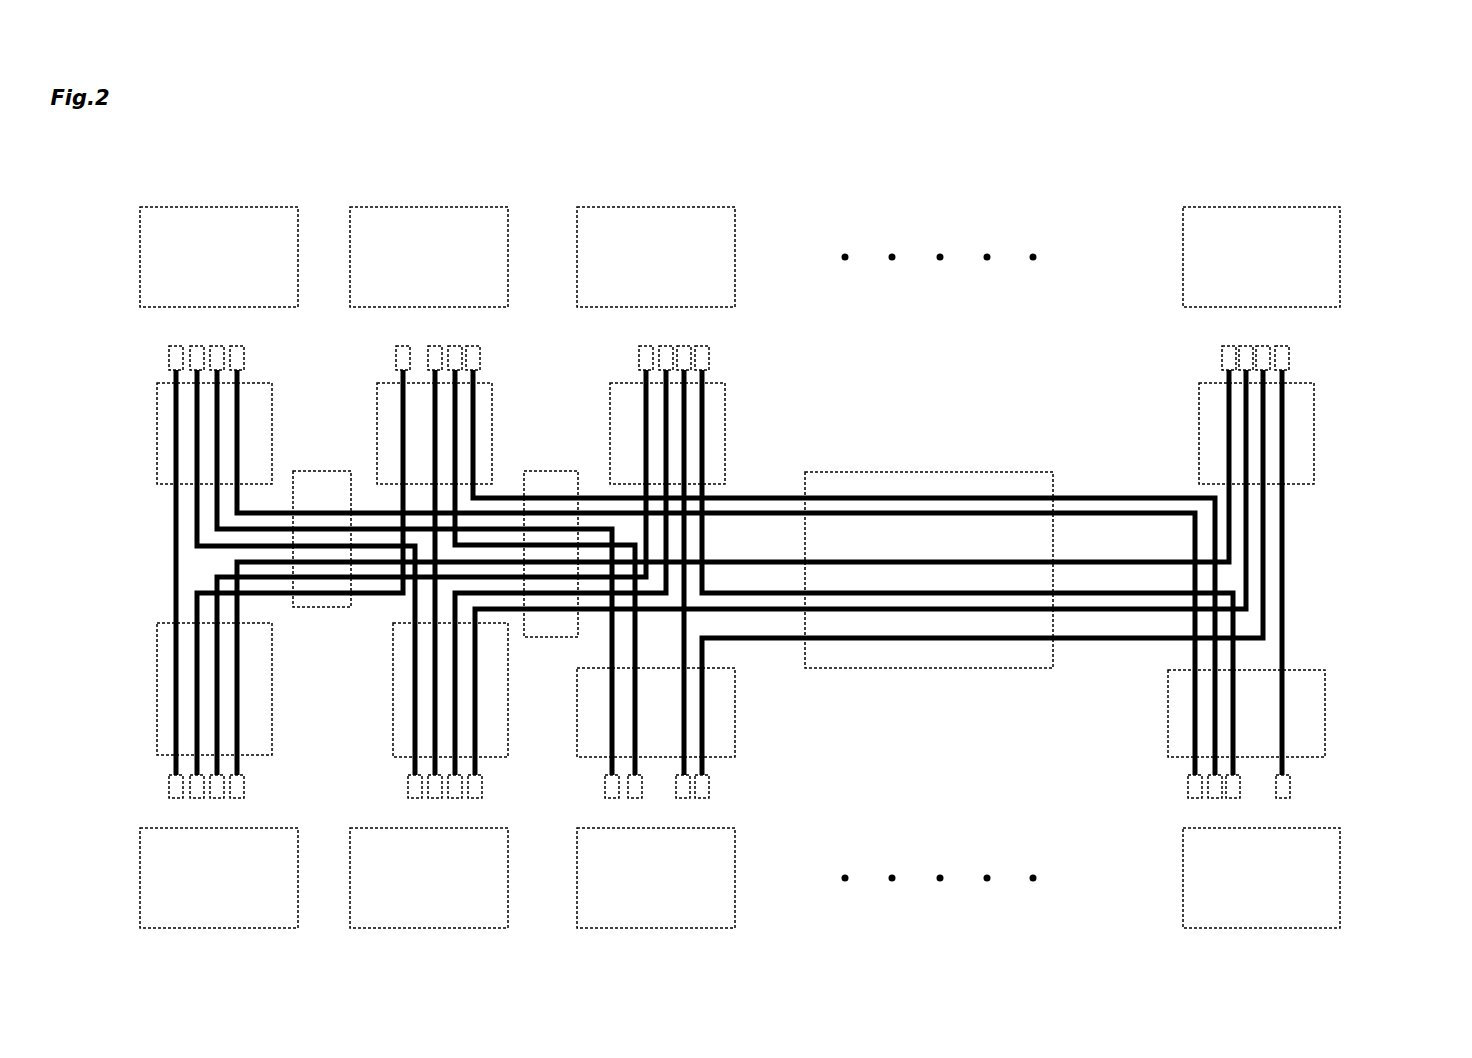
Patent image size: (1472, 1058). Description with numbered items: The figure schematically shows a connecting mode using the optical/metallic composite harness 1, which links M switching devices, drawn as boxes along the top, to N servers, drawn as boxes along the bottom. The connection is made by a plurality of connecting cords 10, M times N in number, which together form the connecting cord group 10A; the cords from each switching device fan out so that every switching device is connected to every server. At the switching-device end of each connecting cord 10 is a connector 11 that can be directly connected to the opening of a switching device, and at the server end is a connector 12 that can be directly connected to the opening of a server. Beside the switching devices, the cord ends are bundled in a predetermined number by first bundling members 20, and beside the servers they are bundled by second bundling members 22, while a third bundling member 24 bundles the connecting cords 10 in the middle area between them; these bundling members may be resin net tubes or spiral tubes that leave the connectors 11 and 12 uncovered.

The optical/metallic composite harness 1 is at (1394, 468).
The connecting cord 10 is at (193, 372).
The connecting cord group 10A is at (752, 487).
The connector 11 is at (168, 352).
The connector 12 is at (169, 787).
The first bundling member 20 is at (157, 440).
The second bundling member 22 is at (157, 675).
The third bundling member 24 is at (310, 471).